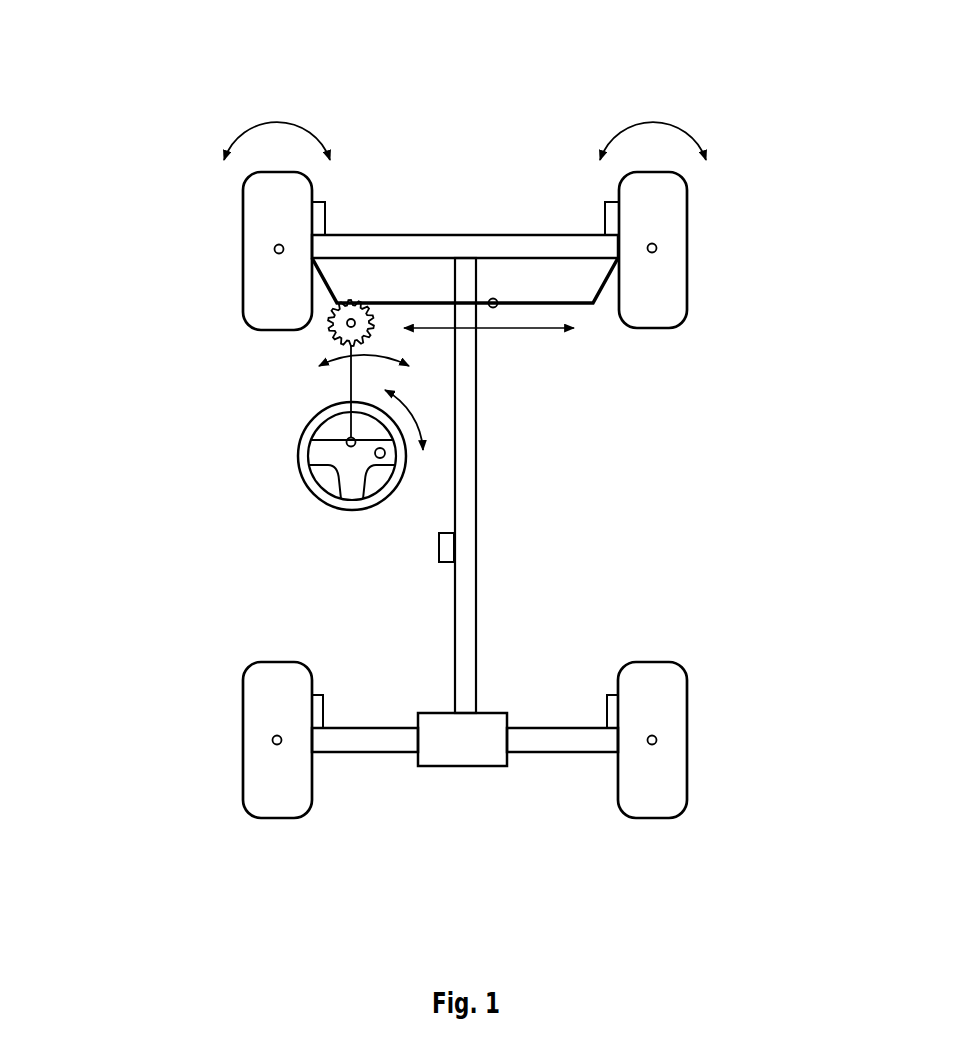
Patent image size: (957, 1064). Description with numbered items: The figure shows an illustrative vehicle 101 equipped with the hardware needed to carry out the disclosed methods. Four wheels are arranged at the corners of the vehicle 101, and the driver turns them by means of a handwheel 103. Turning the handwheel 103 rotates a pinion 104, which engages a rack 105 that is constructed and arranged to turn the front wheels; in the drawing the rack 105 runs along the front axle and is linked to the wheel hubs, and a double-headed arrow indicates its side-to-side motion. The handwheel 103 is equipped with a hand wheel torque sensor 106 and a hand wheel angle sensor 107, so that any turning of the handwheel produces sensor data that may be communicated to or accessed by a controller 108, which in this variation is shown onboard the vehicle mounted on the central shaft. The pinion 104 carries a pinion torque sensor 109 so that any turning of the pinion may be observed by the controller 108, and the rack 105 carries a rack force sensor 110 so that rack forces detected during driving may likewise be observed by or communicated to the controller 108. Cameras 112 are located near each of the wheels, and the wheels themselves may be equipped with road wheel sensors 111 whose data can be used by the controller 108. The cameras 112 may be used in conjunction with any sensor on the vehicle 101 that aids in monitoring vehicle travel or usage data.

The vehicle 101 is at (748, 197).
The handwheel 103 is at (327, 500).
The pinion 104 is at (336, 336).
The rack 105 is at (428, 303).
The hand wheel torque sensor 106 is at (375, 454).
The hand wheel angle sensor 107 is at (346, 441).
The controller 108 is at (439, 551).
The pinion torque sensor 109 is at (347, 324).
The rack force sensor 110 is at (493, 299).
The wheels 111 is at (279, 736).
The cameras 112 is at (325, 218).